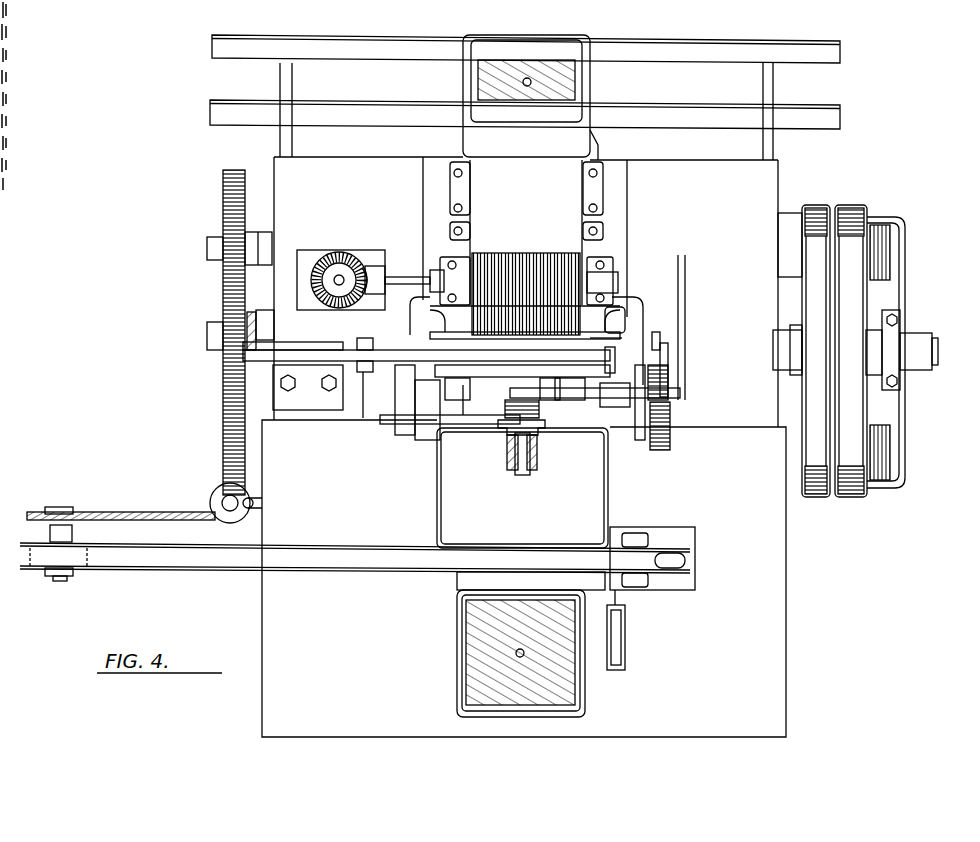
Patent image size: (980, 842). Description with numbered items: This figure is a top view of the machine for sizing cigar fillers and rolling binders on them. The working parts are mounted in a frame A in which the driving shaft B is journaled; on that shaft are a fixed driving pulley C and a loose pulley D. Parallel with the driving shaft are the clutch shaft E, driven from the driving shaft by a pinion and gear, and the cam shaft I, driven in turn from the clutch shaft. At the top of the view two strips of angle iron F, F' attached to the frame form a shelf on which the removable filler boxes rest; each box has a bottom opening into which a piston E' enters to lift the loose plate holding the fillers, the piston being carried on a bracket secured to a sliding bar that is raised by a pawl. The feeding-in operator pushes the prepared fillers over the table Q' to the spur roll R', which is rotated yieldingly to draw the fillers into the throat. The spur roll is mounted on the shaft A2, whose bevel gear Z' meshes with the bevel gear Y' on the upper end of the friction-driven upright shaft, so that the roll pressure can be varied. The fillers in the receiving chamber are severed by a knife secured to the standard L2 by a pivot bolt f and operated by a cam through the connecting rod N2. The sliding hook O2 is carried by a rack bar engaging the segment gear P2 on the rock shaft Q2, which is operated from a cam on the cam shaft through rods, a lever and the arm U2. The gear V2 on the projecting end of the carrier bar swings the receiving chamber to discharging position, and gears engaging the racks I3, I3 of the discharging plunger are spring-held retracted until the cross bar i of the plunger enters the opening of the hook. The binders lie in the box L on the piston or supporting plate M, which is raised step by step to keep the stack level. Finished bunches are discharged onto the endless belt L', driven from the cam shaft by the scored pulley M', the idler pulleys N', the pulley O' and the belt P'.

The frame A is at (775, 190).
The angle iron strip F is at (526, 37).
The sliding bar F' is at (525, 101).
The piston E' is at (526, 154).
The table Q' is at (447, 189).
The spur roll R' is at (515, 278).
The shaft A2 is at (405, 280).
The bevel gear Y' is at (341, 267).
The bevel gear Z' is at (371, 259).
The clutch shaft E is at (222, 332).
The cam shaft I is at (208, 340).
The scored pulley M' is at (276, 330).
The pivot bolt f is at (262, 358).
The standard L2 is at (284, 356).
The connecting rod N2 is at (362, 380).
The arm U2 is at (672, 386).
The rock shaft Q2 is at (592, 400).
The gear V2 is at (660, 450).
The segment gear P2 is at (512, 420).
The sliding hook O2 is at (520, 436).
The rack I3 is at (510, 462).
The cross bar i is at (521, 476).
The endless belt L' is at (357, 567).
The pulley O' is at (55, 530).
The belt P' is at (121, 500).
The idler pulley N' is at (221, 502).
The box L is at (523, 644).
The piston or supporting plate M is at (496, 652).
The fixed driving pulley C is at (818, 498).
The loose pulley D is at (860, 498).
The driving shaft B is at (938, 360).